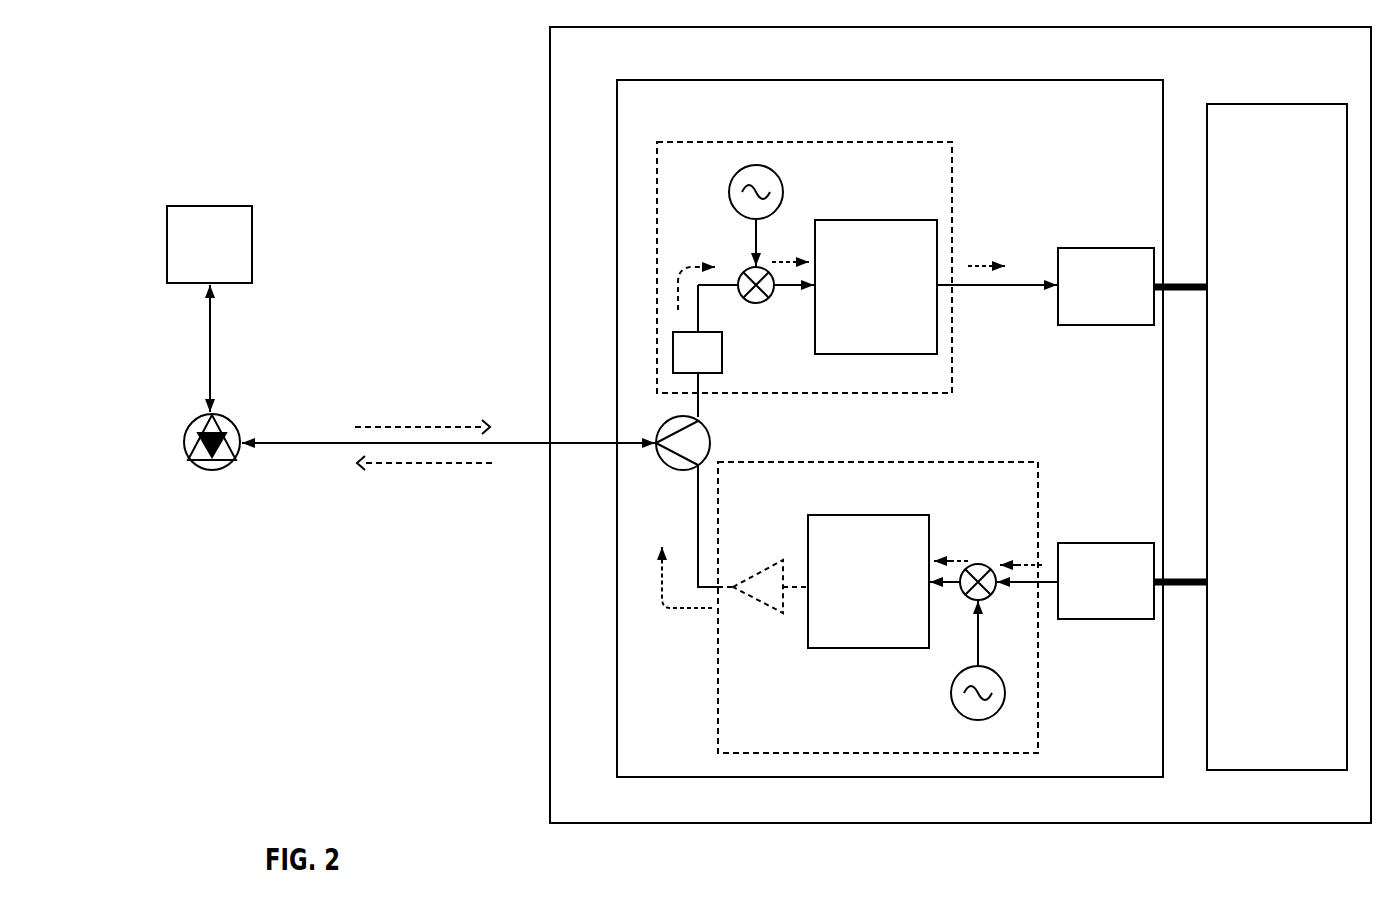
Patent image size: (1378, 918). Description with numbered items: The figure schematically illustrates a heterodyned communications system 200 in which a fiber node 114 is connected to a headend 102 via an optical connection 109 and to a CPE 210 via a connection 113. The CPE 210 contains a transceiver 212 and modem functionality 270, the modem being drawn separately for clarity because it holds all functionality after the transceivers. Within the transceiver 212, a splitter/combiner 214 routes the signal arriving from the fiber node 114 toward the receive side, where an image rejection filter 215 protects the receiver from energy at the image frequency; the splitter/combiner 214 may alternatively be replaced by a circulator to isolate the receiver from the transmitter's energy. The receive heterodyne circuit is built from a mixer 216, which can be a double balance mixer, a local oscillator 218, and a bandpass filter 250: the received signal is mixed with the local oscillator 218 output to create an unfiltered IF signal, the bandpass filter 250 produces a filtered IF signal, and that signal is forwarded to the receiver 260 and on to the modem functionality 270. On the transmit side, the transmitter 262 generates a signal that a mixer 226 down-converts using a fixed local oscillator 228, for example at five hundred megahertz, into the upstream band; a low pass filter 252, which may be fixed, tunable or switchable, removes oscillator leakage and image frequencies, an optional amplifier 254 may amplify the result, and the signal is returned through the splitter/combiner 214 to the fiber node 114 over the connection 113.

The system 200 is at (219, 118).
The headend 102 is at (209, 244).
The optical connection 109 is at (230, 350).
The fiber node 114 is at (199, 492).
The connection 113 is at (272, 460).
The CPE 210 is at (960, 425).
The transceiver 212 is at (890, 428).
The modem functionality 270 is at (1250, 437).
The receiver 260 is at (1045, 286).
The transmitter 262 is at (1075, 581).
The local oscillator 218 is at (791, 184).
The mixer 216 is at (736, 265).
The image rejection filter 215 is at (697, 351).
The bandpass filter 250 is at (876, 287).
The splitter/combiner 214 is at (727, 437).
The amplifier 254 is at (763, 586).
The low pass filter 252 is at (868, 581).
The mixer 226 is at (980, 563).
The local oscillator 228 is at (948, 687).